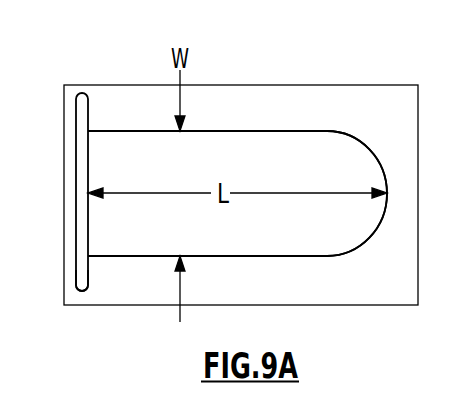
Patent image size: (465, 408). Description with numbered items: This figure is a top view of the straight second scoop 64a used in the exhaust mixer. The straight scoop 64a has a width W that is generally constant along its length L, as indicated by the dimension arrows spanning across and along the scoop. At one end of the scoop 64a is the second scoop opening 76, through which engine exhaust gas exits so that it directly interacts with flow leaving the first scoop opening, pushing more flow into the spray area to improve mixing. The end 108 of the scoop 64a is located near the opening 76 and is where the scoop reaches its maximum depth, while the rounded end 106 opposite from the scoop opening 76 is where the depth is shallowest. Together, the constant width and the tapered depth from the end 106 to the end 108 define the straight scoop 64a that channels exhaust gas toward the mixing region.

The straight second scoop 64a is at (265, 177).
The end of the scoop 108 is at (106, 118).
The end opposite from the scoop opening 106 is at (360, 155).
The second scoop opening 76 is at (82, 276).